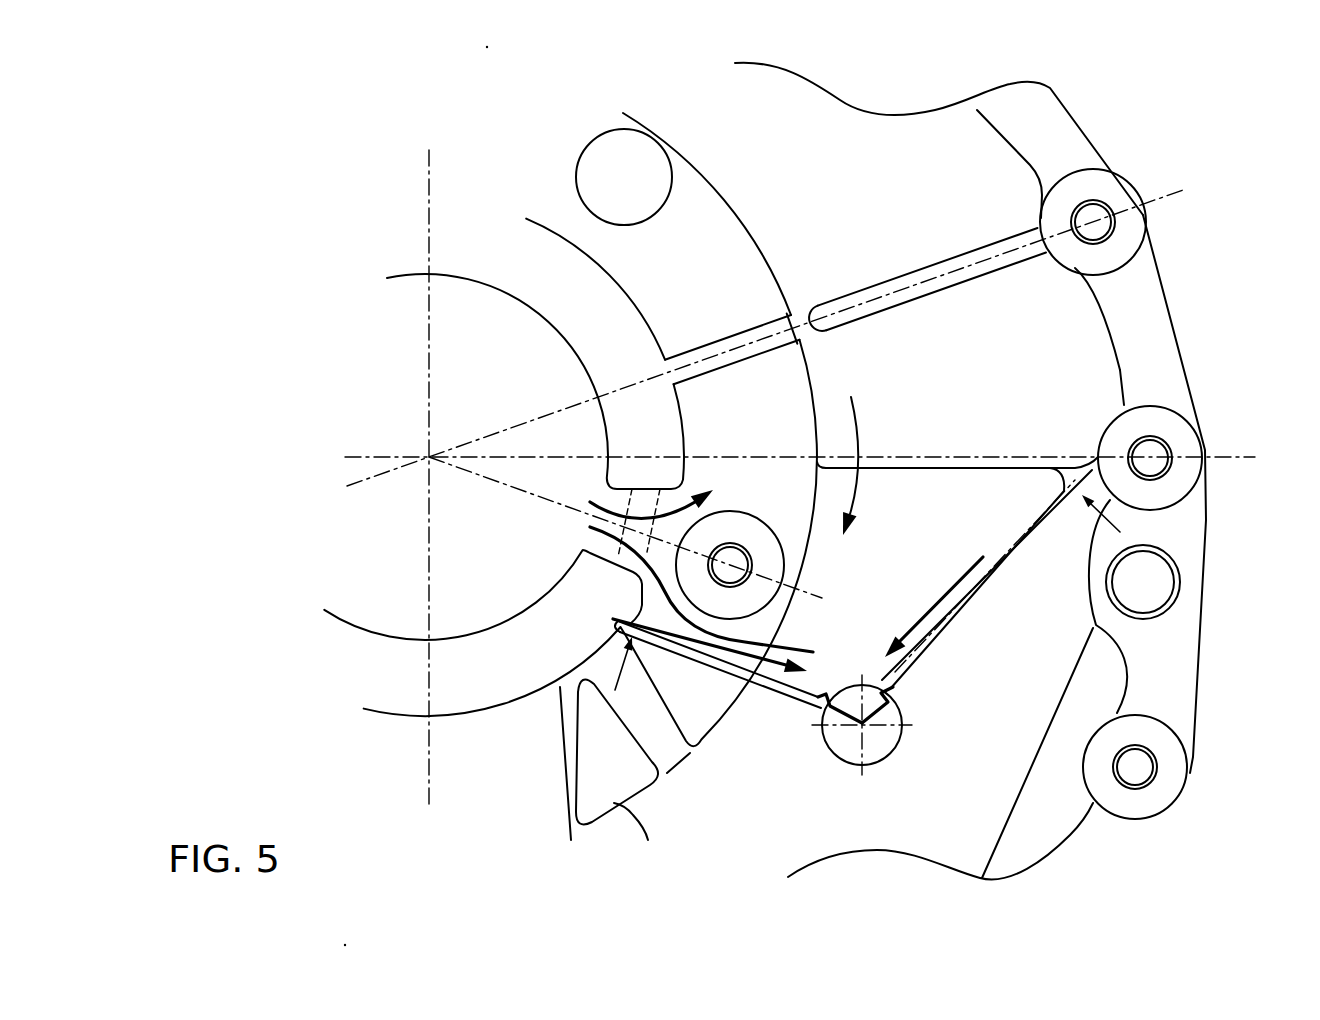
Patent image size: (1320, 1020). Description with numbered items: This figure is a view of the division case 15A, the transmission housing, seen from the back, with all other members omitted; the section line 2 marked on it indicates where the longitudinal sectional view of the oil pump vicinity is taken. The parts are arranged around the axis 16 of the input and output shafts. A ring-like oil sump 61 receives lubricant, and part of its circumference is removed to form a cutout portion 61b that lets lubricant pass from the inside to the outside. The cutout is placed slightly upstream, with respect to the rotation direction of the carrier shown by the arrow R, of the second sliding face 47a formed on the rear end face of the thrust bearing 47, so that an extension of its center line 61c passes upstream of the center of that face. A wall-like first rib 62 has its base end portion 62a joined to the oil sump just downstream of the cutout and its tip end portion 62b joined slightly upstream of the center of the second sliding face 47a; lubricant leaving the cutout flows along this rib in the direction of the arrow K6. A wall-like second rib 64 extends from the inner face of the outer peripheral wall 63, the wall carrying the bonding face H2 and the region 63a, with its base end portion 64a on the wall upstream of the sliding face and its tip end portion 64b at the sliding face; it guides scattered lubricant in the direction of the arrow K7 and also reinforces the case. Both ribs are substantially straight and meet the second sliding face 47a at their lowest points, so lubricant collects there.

The axis 16 is at (427, 455).
The oil sump 61 is at (644, 293).
The cutout portion 61b is at (613, 500).
The center line 61c is at (520, 512).
The first rib 62 is at (722, 686).
The base end portion 62a is at (635, 622).
The tip end portion 62b is at (822, 707).
The arrow K6 is at (758, 647).
The second sliding face 47a is at (880, 747).
The thrust bearing 47 is at (854, 772).
The second rib 64 is at (991, 609).
The base end portion 64a is at (1068, 482).
The tip end portion 64b is at (893, 690).
The arrow K7 is at (950, 578).
The outer peripheral wall 63 is at (1103, 308).
The slot edge 63a is at (1120, 360).
The bonding face H2 is at (1165, 333).
The division case 15A is at (1175, 262).
The line 2— 2 is at (867, 592).
The arrow R is at (860, 466).